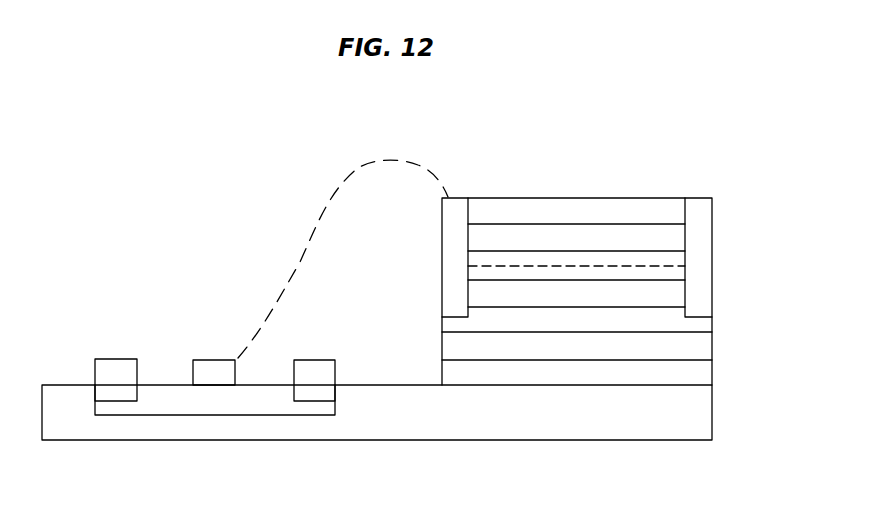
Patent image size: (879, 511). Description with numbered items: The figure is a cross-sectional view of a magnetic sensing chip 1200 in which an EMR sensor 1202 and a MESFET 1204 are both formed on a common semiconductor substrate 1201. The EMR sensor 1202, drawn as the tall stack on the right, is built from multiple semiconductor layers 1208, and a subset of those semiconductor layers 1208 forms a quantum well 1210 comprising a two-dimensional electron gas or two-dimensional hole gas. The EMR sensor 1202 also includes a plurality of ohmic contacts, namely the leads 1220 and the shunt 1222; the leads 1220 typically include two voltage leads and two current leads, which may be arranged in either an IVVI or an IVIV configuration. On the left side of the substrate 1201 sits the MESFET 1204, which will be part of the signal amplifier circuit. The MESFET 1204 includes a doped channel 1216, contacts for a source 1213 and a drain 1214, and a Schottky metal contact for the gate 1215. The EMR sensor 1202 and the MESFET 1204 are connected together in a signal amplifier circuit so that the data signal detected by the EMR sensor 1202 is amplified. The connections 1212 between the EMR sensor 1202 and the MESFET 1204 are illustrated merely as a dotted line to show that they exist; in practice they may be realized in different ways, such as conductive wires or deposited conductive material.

The magnetic sensing chip 1200 is at (157, 128).
The semiconductor substrate 1201 is at (421, 430).
The EMR sensor 1202 is at (577, 242).
The MESFET 1204 is at (168, 300).
The semiconductor layers 1208 is at (577, 264).
The quantum well 1210 is at (430, 253).
The connections 1212 is at (363, 169).
The source 1213 is at (120, 359).
The drain 1214 is at (323, 359).
The gate 1215 is at (214, 360).
The doped channel 1216 is at (182, 405).
The leads 1220 is at (460, 205).
The shunt 1222 is at (694, 235).